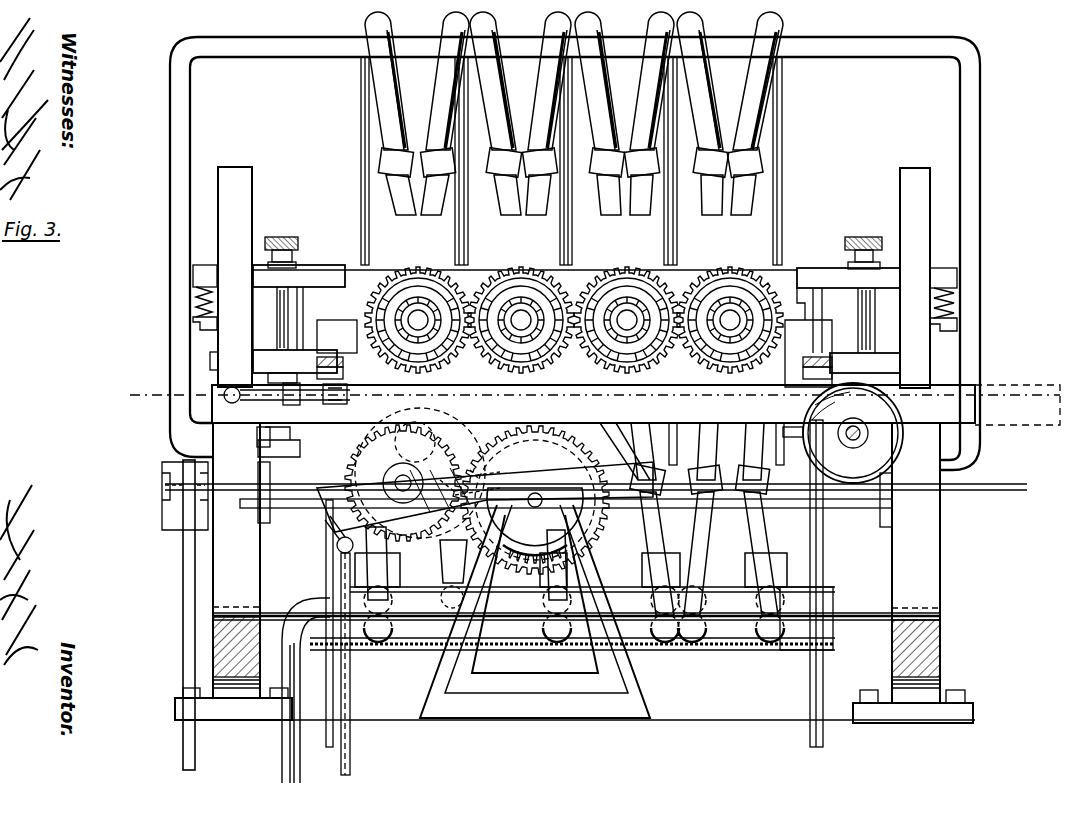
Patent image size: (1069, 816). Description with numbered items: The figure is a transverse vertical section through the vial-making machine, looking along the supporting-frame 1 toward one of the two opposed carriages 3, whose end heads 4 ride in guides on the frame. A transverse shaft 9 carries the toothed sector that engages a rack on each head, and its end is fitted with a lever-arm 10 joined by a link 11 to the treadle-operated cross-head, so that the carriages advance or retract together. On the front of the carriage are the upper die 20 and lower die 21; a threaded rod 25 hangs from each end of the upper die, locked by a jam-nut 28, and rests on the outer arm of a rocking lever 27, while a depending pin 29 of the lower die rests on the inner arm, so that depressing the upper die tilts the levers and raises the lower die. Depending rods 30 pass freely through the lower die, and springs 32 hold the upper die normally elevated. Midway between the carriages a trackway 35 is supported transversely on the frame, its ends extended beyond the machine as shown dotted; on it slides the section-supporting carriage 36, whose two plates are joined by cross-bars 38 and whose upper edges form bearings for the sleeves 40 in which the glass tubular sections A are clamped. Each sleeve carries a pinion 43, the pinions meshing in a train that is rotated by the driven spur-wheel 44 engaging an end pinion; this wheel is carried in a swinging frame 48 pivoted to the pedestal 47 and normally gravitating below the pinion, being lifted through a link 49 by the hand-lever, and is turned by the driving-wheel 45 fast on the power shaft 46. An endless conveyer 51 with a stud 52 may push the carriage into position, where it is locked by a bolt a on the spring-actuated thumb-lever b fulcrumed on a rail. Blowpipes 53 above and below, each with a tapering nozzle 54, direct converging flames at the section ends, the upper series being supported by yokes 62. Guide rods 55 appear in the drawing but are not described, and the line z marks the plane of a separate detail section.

The supporting-frame 1 is at (245, 589).
The carriage 3 is at (900, 193).
The end head 4 is at (232, 214).
The transverse shaft 9 is at (848, 508).
The lever-arm 10 is at (165, 470).
The link 11 is at (183, 601).
The upper die 20 is at (350, 282).
The lower die 21 is at (213, 358).
The rod 25 is at (280, 325).
The rocking lever 27 is at (298, 428).
The jam-nut 28 is at (298, 245).
The depending pin 29 is at (262, 432).
The depending rod 30 is at (347, 692).
The spring 32 is at (200, 295).
The trackway 35 is at (465, 388).
The carriage 36 is at (808, 353).
The cross-bar 38 is at (805, 366).
The sleeve 40 is at (419, 340).
The pinion 43 is at (490, 375).
The driven spur-wheel 44 is at (415, 474).
The driving-wheel 45 is at (535, 500).
The shaft 46 is at (537, 510).
The pedestal 47 is at (630, 681).
The swinging frame 48 is at (485, 507).
The link 49 is at (349, 742).
The endless conveyer 51 is at (1028, 487).
The stud 52 is at (805, 428).
The blowpipe 53 is at (571, 327).
The tapering nozzle 54 is at (572, 229).
The guide rod 55 is at (452, 546).
The yoke 62 is at (978, 165).
The bolt a is at (327, 405).
The thumb-lever b is at (287, 404).
The section line z z is at (593, 399).
The glass tubular section A is at (790, 265).